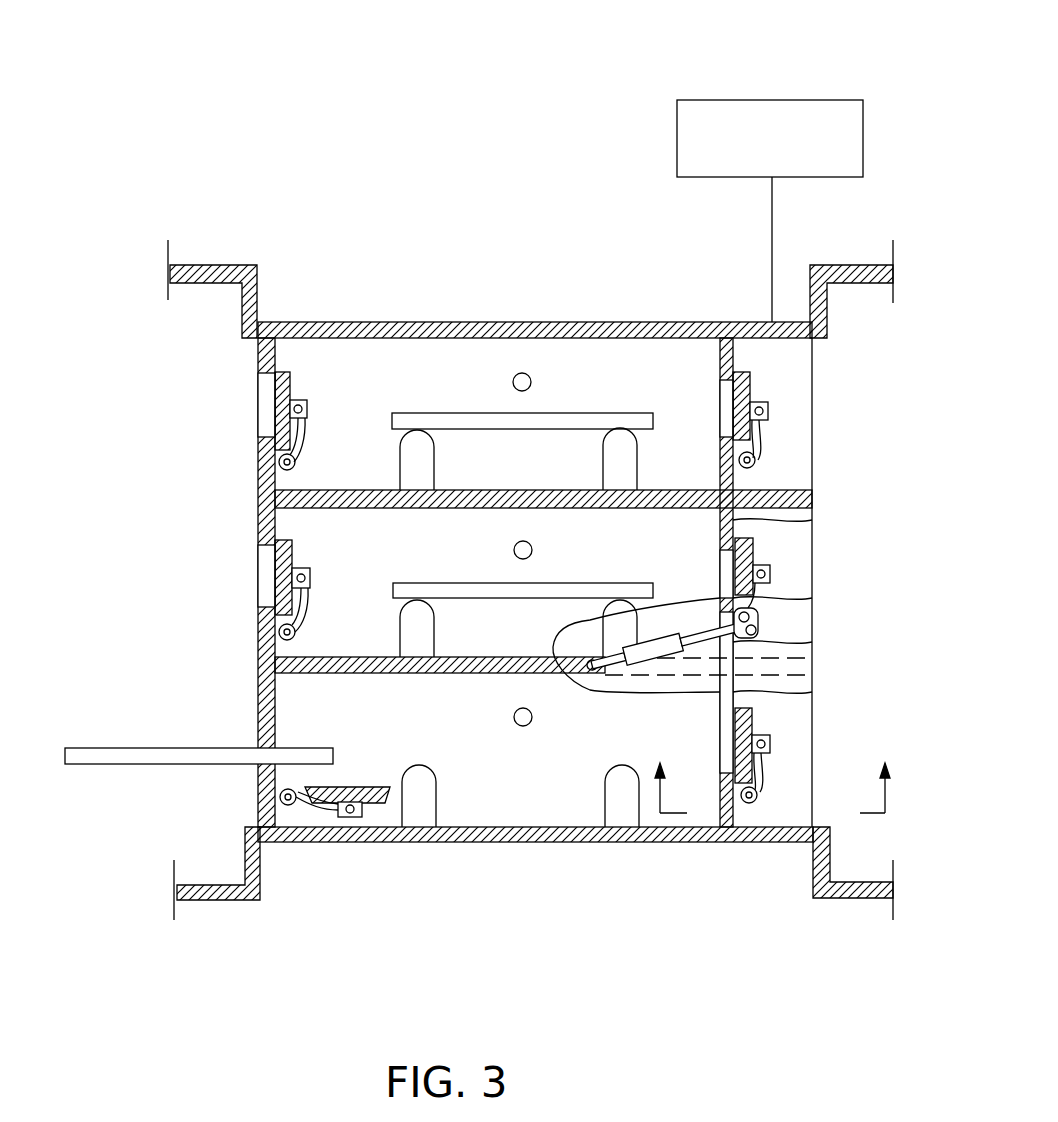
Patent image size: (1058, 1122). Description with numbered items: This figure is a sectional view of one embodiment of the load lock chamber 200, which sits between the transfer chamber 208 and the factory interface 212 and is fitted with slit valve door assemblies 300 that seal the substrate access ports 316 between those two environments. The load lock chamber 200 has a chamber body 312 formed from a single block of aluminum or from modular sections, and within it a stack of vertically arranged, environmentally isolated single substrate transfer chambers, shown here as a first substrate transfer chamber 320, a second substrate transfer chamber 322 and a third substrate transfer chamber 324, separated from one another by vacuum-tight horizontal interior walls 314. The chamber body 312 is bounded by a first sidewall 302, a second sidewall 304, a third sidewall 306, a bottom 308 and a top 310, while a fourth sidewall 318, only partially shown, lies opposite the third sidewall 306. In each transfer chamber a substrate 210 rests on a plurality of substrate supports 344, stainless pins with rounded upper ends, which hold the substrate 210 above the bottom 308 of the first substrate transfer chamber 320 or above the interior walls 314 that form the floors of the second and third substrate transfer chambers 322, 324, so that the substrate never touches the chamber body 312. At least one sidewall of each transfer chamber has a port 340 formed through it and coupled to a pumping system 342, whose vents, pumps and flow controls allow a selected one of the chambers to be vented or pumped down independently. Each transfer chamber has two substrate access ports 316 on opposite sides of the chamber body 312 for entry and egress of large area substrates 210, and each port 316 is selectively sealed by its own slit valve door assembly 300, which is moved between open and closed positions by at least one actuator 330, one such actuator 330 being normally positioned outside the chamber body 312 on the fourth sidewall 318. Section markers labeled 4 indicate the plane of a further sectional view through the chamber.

The load lock chamber 200 is at (532, 320).
The transfer chamber 208 is at (214, 265).
The substrate 210 is at (606, 413).
The factory interface 212 is at (855, 265).
The slit valve door assembly 300 is at (258, 405).
The first sidewall 302 is at (812, 540).
The second sidewall 304 is at (258, 525).
The third sidewall 306 is at (371, 370).
The bottom 308 is at (437, 843).
The top 310 is at (388, 322).
The chamber body 312 is at (320, 322).
The horizontal interior wall 314 is at (312, 508).
The substrate access port 316 is at (258, 395).
The fourth sidewall 318 is at (592, 622).
The first substrate transfer chamber 320 is at (592, 364).
The second substrate transfer chamber 322 is at (758, 635).
The third substrate transfer chamber 324 is at (655, 843).
The actuator 330 is at (628, 668).
The port 340 is at (511, 378).
The pumping system 342 is at (715, 100).
The substrate support 344 is at (423, 462).
The section line 4- 4 is at (771, 771).